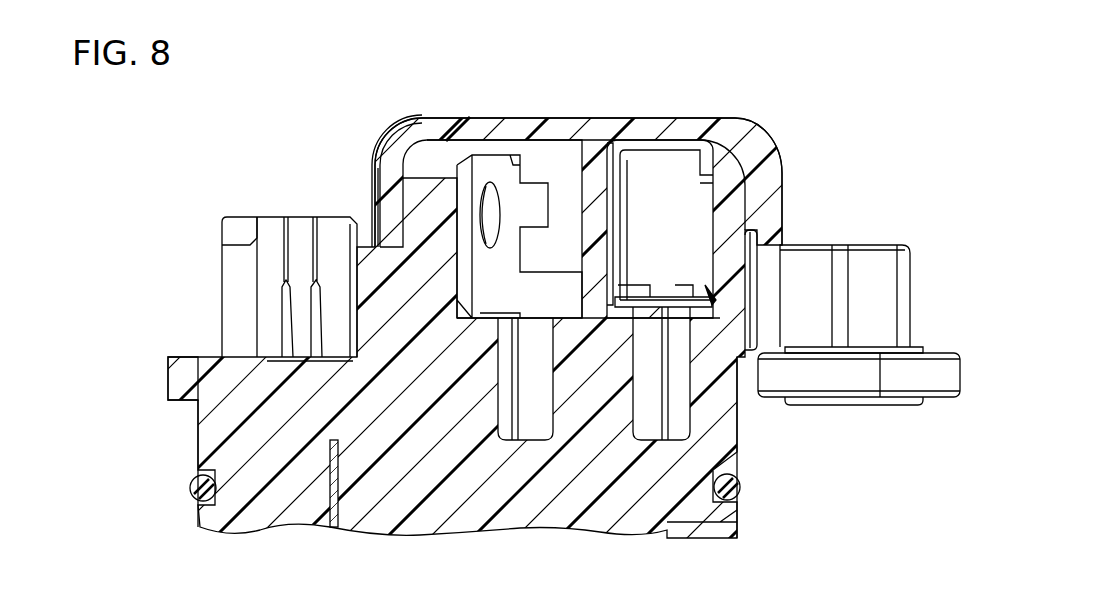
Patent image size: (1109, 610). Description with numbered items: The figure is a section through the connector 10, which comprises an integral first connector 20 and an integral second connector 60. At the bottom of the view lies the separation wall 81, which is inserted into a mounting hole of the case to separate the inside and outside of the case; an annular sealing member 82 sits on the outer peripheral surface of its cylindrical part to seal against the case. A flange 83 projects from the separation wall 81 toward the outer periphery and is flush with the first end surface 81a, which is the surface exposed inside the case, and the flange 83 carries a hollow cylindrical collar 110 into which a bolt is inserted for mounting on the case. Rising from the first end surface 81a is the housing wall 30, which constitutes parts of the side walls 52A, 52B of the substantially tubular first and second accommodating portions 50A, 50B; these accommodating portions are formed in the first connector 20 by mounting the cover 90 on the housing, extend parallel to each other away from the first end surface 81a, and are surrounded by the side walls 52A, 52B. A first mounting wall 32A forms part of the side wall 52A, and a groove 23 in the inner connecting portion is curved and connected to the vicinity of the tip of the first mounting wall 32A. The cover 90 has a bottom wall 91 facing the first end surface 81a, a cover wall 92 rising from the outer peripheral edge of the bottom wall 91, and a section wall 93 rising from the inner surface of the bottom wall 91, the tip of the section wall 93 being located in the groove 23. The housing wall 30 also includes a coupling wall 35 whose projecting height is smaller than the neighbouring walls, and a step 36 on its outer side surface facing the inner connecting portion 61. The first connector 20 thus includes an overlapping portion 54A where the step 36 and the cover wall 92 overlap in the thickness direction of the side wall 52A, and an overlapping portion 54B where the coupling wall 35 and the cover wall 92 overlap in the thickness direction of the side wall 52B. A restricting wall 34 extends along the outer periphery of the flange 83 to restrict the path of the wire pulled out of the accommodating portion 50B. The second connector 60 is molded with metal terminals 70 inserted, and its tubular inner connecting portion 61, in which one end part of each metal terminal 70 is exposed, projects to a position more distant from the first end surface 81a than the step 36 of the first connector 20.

The connector 10 is at (855, 108).
The first connector 20 is at (718, 113).
The groove 23 is at (606, 318).
The housing wall 30 is at (850, 338).
The first mounting wall 32A is at (460, 128).
The restricting wall 34 is at (883, 295).
The coupling wall 35 is at (735, 330).
The step 36 is at (400, 243).
The first accommodating portion 50A is at (517, 152).
The second accommodating portion 50B is at (641, 167).
The side wall 52A is at (578, 252).
The side wall 52B is at (751, 290).
The overlapping portion 54A is at (382, 182).
The overlapping portion 54B is at (716, 300).
The second connector 60 is at (268, 163).
The inner connecting portion 61 is at (240, 216).
The metal terminals 70 is at (273, 303).
The separation wall 81 is at (197, 440).
The first end surface 81a is at (193, 357).
The annular sealing member 82 is at (190, 488).
The flanges 83 is at (938, 398).
The cover 90 is at (776, 135).
The bottom wall 91 is at (578, 121).
The cover wall 92 is at (757, 415).
The section wall 93 is at (595, 293).
The collar 110 is at (852, 407).